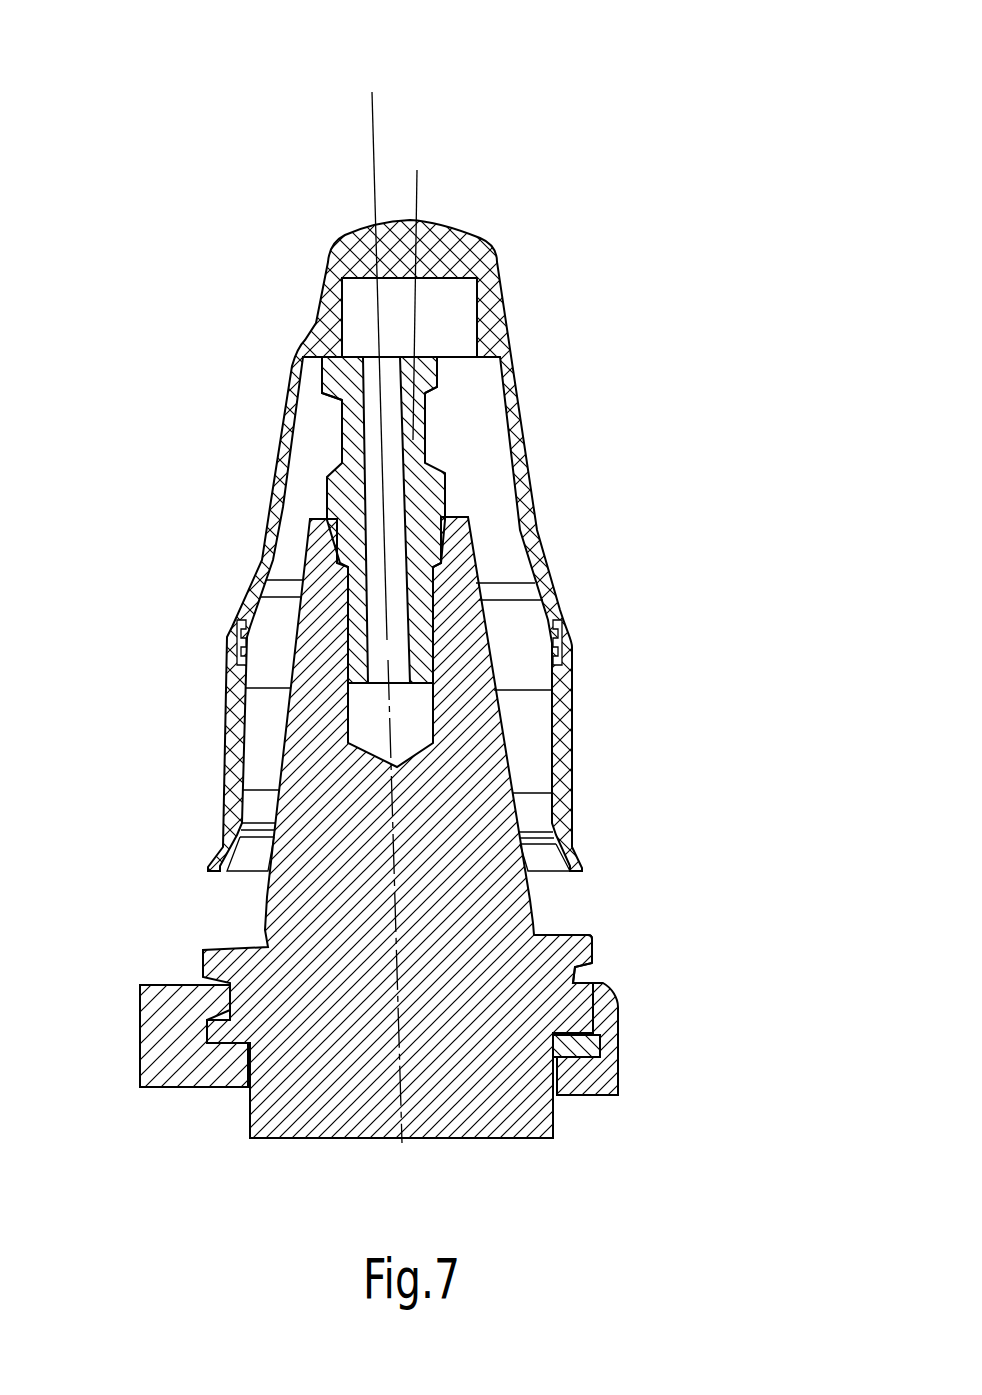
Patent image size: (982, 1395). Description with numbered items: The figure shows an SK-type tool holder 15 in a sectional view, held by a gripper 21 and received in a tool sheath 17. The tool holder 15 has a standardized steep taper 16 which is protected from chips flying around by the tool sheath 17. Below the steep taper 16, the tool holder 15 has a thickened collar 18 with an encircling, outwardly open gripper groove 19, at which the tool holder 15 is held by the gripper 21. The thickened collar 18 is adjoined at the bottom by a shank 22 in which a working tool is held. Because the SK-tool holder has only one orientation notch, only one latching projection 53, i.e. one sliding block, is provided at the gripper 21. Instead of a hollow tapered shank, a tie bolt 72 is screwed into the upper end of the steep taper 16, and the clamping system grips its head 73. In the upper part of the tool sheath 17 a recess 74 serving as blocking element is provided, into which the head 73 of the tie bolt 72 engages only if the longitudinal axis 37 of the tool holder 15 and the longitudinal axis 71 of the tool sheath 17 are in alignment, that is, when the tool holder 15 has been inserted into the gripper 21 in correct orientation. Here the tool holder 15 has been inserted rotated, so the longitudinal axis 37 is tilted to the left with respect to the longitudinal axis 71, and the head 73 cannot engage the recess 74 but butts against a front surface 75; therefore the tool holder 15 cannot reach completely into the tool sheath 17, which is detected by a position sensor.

The tool holder 15 is at (598, 897).
The steep taper 16 is at (502, 735).
The tool sheath 17 is at (522, 421).
The thickened collar 18 is at (592, 937).
The gripper groove 19 is at (588, 970).
The gripper 21 is at (175, 1068).
The shank 22 is at (305, 1120).
The longitudinal axis 37 is at (372, 128).
The latching projection 53 is at (585, 1063).
The longitudinal axis 71 is at (417, 190).
The tie bolt 72 is at (347, 493).
The head 73 is at (337, 378).
The recess 74 is at (452, 320).
The front surface 75 is at (468, 360).